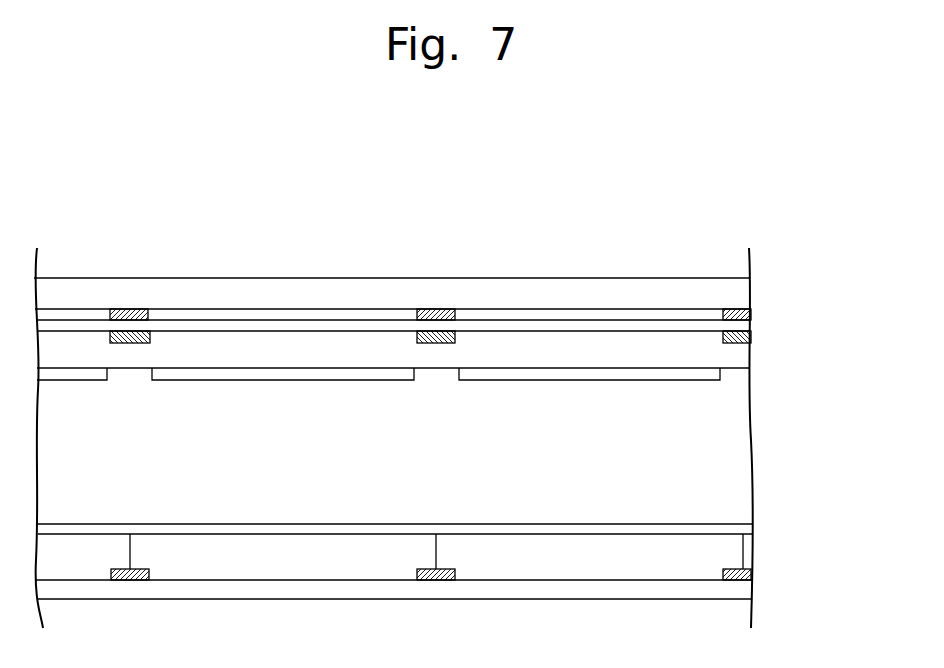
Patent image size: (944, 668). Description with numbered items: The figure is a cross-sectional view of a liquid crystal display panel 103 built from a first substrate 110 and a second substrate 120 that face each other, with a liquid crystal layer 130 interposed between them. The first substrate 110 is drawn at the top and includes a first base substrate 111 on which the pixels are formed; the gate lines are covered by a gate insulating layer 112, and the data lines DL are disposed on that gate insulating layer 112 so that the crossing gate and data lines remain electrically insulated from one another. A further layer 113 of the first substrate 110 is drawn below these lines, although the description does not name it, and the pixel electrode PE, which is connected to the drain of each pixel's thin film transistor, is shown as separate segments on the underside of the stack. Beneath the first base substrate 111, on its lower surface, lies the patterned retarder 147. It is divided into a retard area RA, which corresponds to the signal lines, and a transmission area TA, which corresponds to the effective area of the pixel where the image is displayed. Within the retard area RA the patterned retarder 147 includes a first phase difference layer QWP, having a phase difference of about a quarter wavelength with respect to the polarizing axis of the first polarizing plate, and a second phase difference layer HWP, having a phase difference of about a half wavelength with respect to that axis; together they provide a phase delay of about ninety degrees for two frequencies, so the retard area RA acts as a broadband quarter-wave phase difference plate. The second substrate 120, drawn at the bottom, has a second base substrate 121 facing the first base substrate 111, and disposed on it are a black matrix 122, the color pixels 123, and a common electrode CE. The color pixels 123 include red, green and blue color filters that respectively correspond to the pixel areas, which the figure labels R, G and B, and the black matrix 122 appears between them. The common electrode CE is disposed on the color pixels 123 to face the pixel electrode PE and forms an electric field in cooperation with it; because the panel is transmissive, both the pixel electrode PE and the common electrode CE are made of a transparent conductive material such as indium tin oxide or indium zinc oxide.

The liquid crystal display panel 103 is at (680, 229).
The first substrate 110 is at (454, 347).
The first base substrate 111 is at (735, 293).
The gate insulating layer 112 is at (742, 325).
The data line DL is at (745, 338).
The passivation layer 113 is at (743, 357).
The pixel electrode PE is at (427, 392).
The patterned retarder 147 is at (482, 228).
The retard area RA is at (439, 247).
The first phase difference layer QWP is at (433, 309).
The second phase difference layer HWP is at (445, 309).
The transmission area TA is at (550, 247).
The liquid crystal layer 130 is at (727, 452).
The second substrate 120 is at (455, 564).
The common electrode CE is at (740, 525).
The color pixels 123 is at (735, 553).
The black matrix 122 is at (740, 575).
The second base substrate 121 is at (740, 592).
The red color filter R is at (72, 555).
The green color filter G is at (280, 555).
The blue color filter B is at (589, 555).